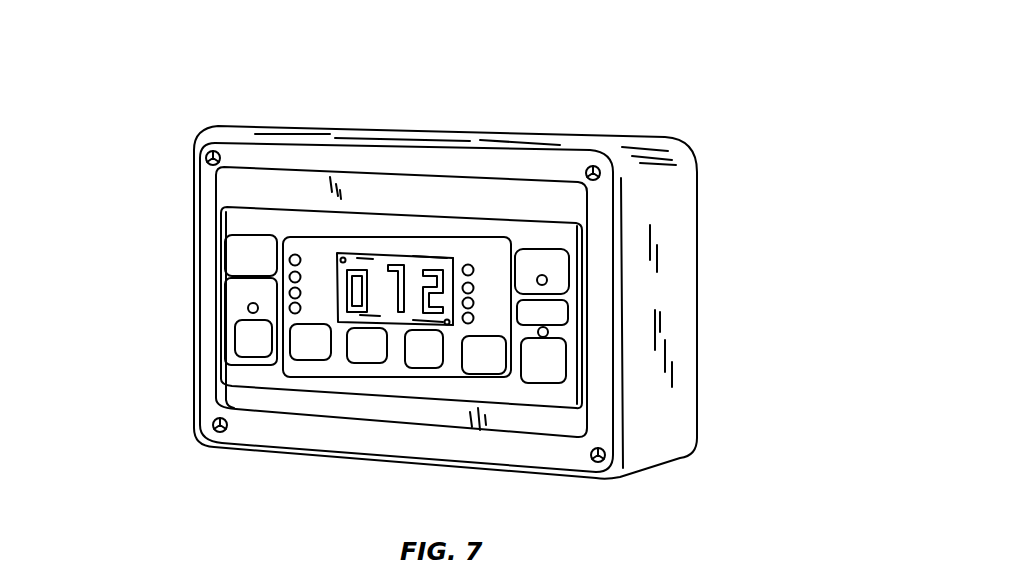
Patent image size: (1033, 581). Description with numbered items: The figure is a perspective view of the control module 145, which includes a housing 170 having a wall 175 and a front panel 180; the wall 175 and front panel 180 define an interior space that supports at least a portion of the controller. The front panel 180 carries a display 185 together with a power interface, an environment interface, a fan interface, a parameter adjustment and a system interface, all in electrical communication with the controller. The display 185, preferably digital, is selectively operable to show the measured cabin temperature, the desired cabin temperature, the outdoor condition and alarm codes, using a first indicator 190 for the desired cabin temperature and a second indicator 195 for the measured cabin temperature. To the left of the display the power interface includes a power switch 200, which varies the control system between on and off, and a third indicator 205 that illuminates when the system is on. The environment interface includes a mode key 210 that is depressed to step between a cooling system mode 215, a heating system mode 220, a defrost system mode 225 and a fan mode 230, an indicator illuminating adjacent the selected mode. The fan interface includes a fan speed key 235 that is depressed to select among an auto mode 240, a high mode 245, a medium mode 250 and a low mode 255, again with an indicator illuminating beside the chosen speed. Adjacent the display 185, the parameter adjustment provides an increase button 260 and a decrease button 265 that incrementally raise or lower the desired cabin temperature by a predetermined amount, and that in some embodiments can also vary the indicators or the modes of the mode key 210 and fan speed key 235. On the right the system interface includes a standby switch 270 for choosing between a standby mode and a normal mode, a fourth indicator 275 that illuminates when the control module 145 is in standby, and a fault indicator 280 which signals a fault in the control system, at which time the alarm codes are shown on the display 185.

The control module 145 is at (620, 62).
The housing 170 is at (690, 150).
The wall 175 is at (680, 242).
The front panel 180 is at (247, 378).
The display 185 is at (411, 288).
The first indicator 190 is at (346, 258).
The second indicator 195 is at (452, 290).
The power switch 200 is at (243, 340).
The third indicator 205 is at (248, 308).
The mode key 210 is at (310, 347).
The cooling system mode 215 is at (296, 271).
The heating system mode 220 is at (289, 257).
The defrost system mode 225 is at (301, 289).
The fan mode 230 is at (290, 304).
The fan speed key 235 is at (492, 362).
The auto mode 240 is at (467, 324).
The high mode 245 is at (473, 306).
The medium mode 250 is at (473, 290).
The low mode 255 is at (473, 266).
The increase button 260 is at (367, 350).
The decrease button 265 is at (428, 350).
The standby switch 270 is at (556, 366).
The fourth indicator 275 is at (549, 334).
The fault indicator 280 is at (548, 280).